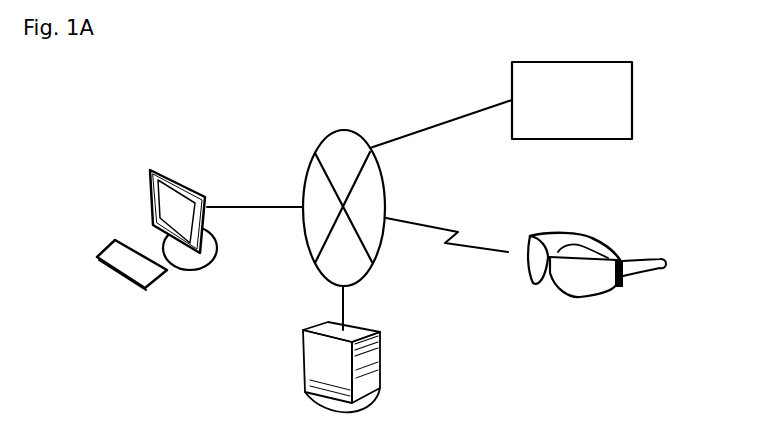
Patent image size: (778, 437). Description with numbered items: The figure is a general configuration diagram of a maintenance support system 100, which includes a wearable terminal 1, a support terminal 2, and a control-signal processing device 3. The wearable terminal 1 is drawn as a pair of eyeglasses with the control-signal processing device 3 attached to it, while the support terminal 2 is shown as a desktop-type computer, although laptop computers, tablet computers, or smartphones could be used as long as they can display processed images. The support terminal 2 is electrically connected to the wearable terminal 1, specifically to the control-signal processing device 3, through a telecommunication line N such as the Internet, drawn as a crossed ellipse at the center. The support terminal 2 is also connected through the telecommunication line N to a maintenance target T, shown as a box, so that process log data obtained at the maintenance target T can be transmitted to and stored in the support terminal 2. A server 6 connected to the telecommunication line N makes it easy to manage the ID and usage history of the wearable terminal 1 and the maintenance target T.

The maintenance support system 100 is at (176, 86).
The wearable terminal 1 is at (597, 246).
The support terminal 2 is at (181, 183).
The control-signal processing device 3 is at (623, 287).
The server 6 is at (382, 387).
The telecommunication line N is at (344, 194).
The maintenance target T is at (537, 125).